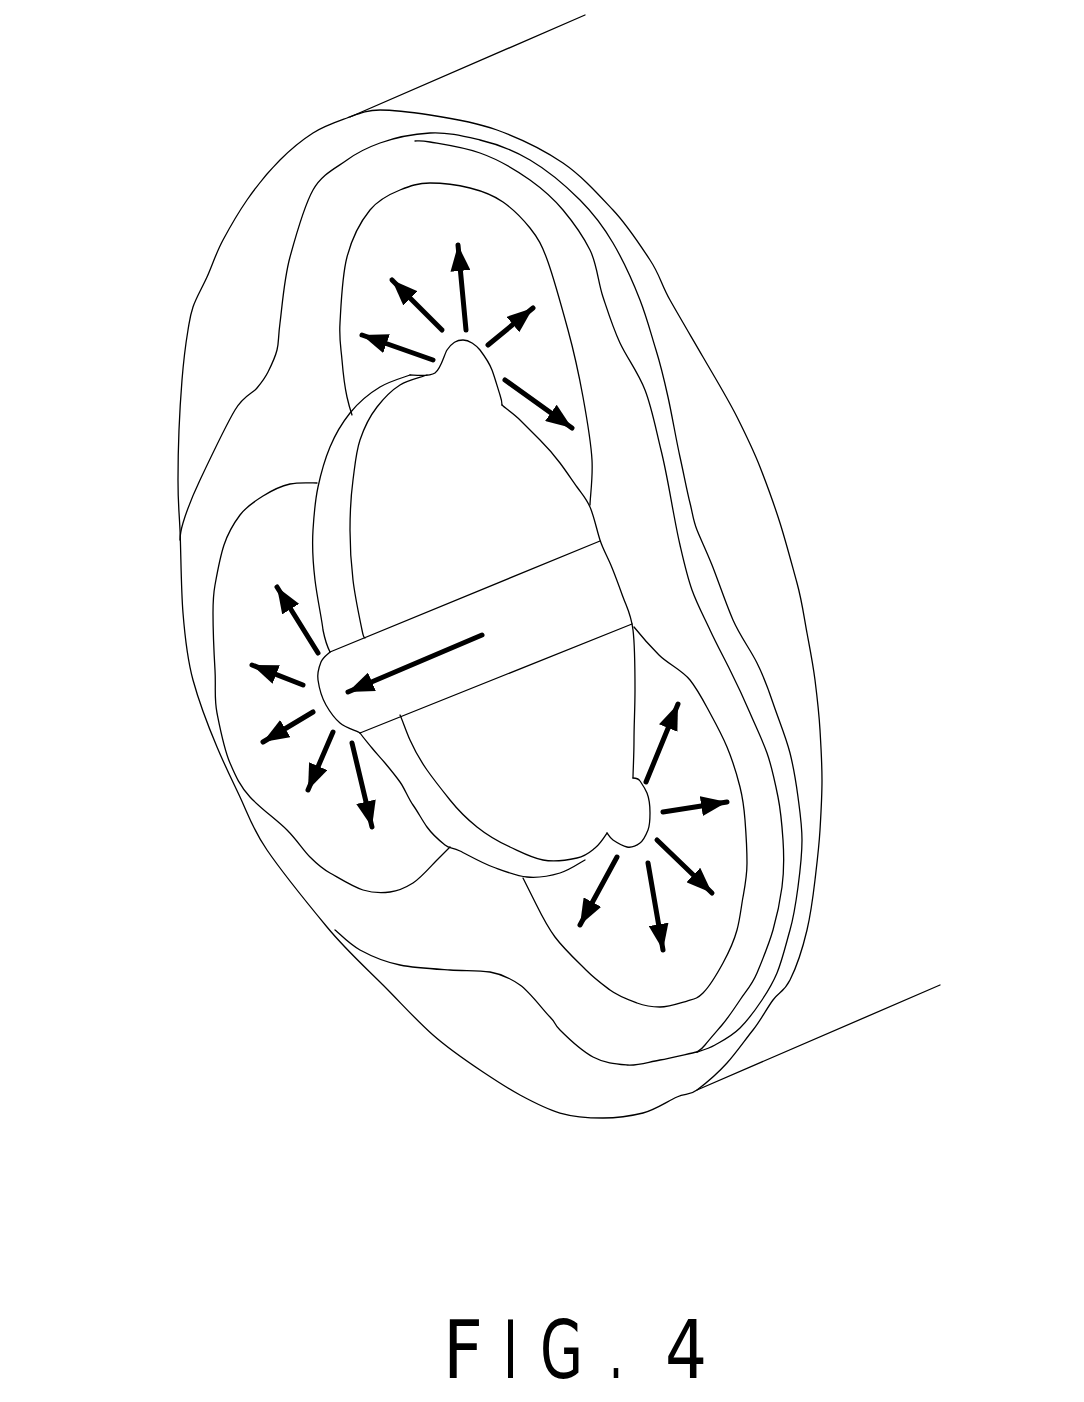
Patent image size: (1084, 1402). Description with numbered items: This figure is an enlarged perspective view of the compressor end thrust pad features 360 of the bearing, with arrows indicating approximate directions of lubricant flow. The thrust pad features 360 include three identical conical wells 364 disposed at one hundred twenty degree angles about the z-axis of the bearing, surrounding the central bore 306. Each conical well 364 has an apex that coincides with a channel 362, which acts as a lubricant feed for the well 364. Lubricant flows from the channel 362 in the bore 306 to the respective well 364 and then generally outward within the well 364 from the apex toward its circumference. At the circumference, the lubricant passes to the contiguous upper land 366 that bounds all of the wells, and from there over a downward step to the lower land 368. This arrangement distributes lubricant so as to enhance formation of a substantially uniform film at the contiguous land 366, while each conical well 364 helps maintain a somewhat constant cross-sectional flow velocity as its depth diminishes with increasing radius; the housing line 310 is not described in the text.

The bore 306 is at (380, 467).
The tubular housing 310 is at (817, 1023).
The thrust pad features 360 is at (437, 609).
The channel 362 is at (523, 597).
The conical well 364 is at (227, 642).
The upper land 366 is at (200, 535).
The lower land 368 is at (193, 432).